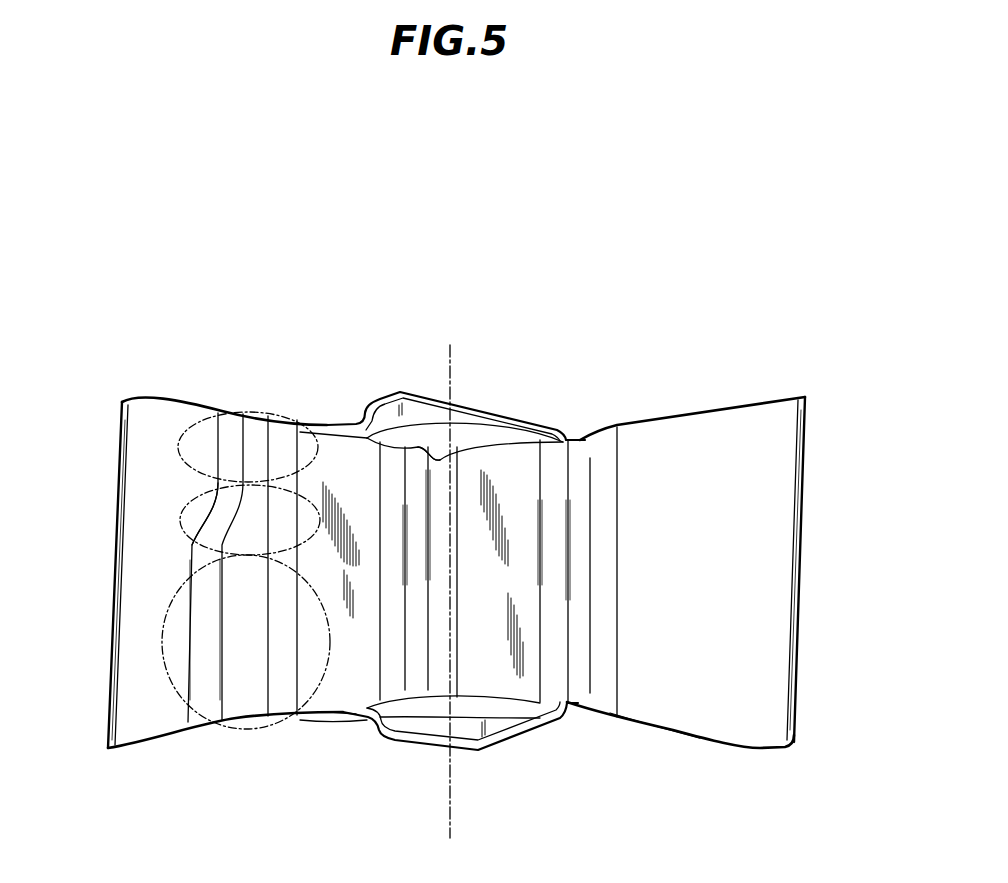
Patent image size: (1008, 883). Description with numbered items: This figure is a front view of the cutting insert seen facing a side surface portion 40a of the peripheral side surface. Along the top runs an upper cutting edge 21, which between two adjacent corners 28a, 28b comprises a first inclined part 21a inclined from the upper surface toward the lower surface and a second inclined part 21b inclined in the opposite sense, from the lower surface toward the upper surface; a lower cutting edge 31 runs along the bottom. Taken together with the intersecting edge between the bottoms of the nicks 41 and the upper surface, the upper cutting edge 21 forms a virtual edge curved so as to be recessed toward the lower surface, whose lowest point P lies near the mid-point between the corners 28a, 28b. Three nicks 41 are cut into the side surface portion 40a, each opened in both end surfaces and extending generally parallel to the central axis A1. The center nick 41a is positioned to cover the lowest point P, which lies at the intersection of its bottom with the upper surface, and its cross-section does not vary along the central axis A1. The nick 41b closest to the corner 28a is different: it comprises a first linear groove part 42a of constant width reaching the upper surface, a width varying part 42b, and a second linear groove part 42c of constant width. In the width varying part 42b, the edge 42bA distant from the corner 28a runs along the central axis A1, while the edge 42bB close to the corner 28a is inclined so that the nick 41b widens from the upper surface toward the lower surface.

The upper cutting edge 21 is at (456, 508).
The first inclined part 21a is at (178, 398).
The second inclined part 21b is at (497, 438).
The corner 28a is at (123, 400).
The corner 28b is at (805, 397).
The nick 41 is at (578, 460).
The center nick 41a is at (392, 462).
The nick closest to the corner 41b is at (255, 437).
The first linear groove part 42a is at (178, 450).
The width varying part 42b is at (180, 517).
The edge of width varying part 42bA is at (342, 720).
The edge of width varying part 42bB is at (200, 520).
The second linear groove part 42c is at (167, 679).
The side surface portion 40a is at (733, 613).
The lower cutting edge 31 is at (668, 730).
The lowest point P is at (430, 462).
The central axis A1 is at (445, 609).